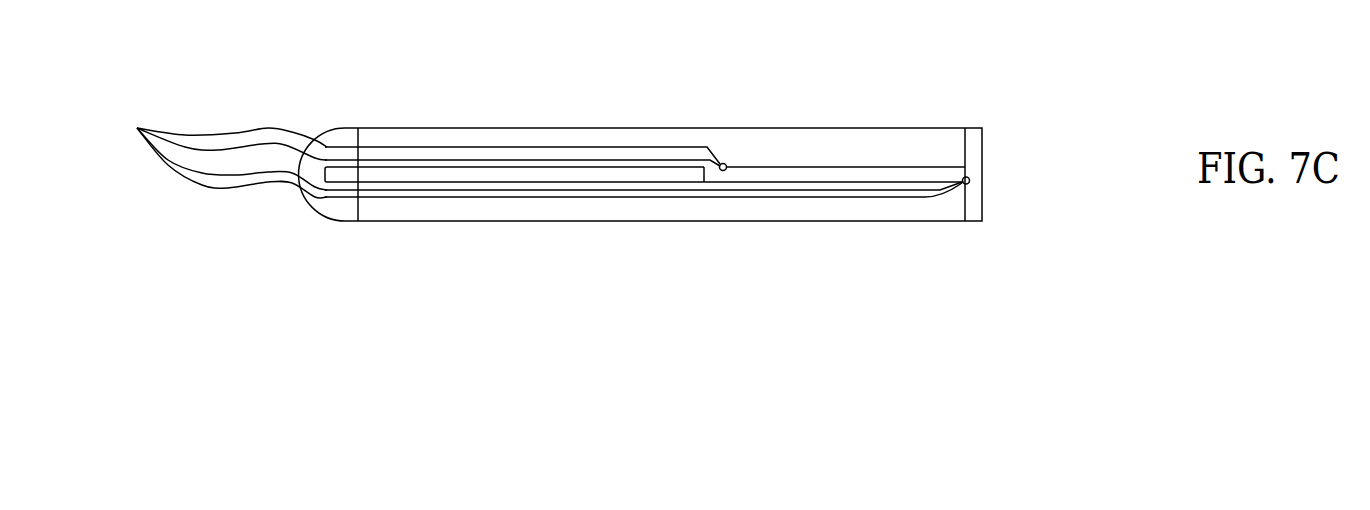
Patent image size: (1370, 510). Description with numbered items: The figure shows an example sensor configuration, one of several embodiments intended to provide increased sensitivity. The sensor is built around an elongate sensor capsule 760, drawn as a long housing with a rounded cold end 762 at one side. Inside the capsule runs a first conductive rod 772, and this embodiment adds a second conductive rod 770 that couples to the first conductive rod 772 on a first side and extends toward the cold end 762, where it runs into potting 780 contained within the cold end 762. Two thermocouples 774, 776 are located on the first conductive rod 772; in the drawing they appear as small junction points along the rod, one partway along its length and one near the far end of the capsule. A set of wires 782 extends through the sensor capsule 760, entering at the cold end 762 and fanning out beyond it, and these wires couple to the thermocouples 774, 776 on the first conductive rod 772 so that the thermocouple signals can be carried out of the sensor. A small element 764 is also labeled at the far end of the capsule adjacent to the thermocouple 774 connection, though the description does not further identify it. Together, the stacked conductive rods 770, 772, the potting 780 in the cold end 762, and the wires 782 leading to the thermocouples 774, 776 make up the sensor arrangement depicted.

The sensor capsule 760 is at (558, 226).
The cold end 762 is at (310, 217).
The pivot pin 764 is at (982, 180).
The second conductive rod 770 is at (673, 183).
The first conductive rod 772 is at (873, 183).
The thermocouple 774 is at (962, 179).
The thermocouple 776 is at (725, 163).
The potting 780 is at (353, 128).
The wires 782 is at (220, 152).